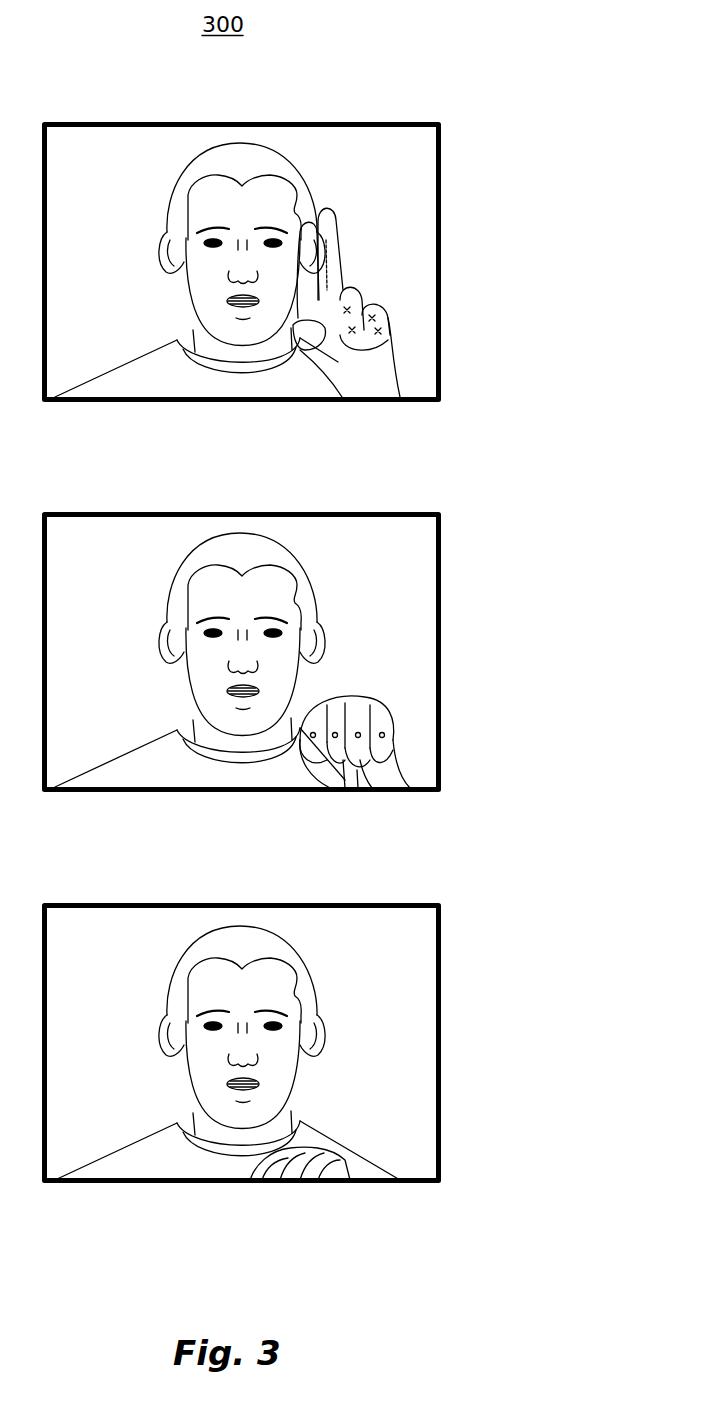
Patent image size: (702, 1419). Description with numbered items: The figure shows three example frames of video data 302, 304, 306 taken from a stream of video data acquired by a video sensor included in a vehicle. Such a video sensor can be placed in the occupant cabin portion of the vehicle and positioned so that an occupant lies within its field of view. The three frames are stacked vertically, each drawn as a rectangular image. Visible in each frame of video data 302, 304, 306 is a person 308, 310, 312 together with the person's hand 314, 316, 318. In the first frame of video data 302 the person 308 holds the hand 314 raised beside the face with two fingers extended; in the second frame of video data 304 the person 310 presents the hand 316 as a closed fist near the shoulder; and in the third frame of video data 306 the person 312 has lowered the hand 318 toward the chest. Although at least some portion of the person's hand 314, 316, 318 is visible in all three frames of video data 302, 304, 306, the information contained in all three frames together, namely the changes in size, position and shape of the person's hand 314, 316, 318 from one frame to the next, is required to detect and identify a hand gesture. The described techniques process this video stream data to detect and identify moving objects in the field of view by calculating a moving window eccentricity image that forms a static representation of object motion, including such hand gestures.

The frame of video data 302 is at (185, 120).
The frame of video data 304 is at (196, 510).
The frame of video data 306 is at (189, 902).
The person 308 is at (236, 142).
The person 310 is at (281, 510).
The person 312 is at (247, 940).
The person's hand 314 is at (392, 337).
The person's hand 316 is at (392, 733).
The person's hand 318 is at (345, 1163).